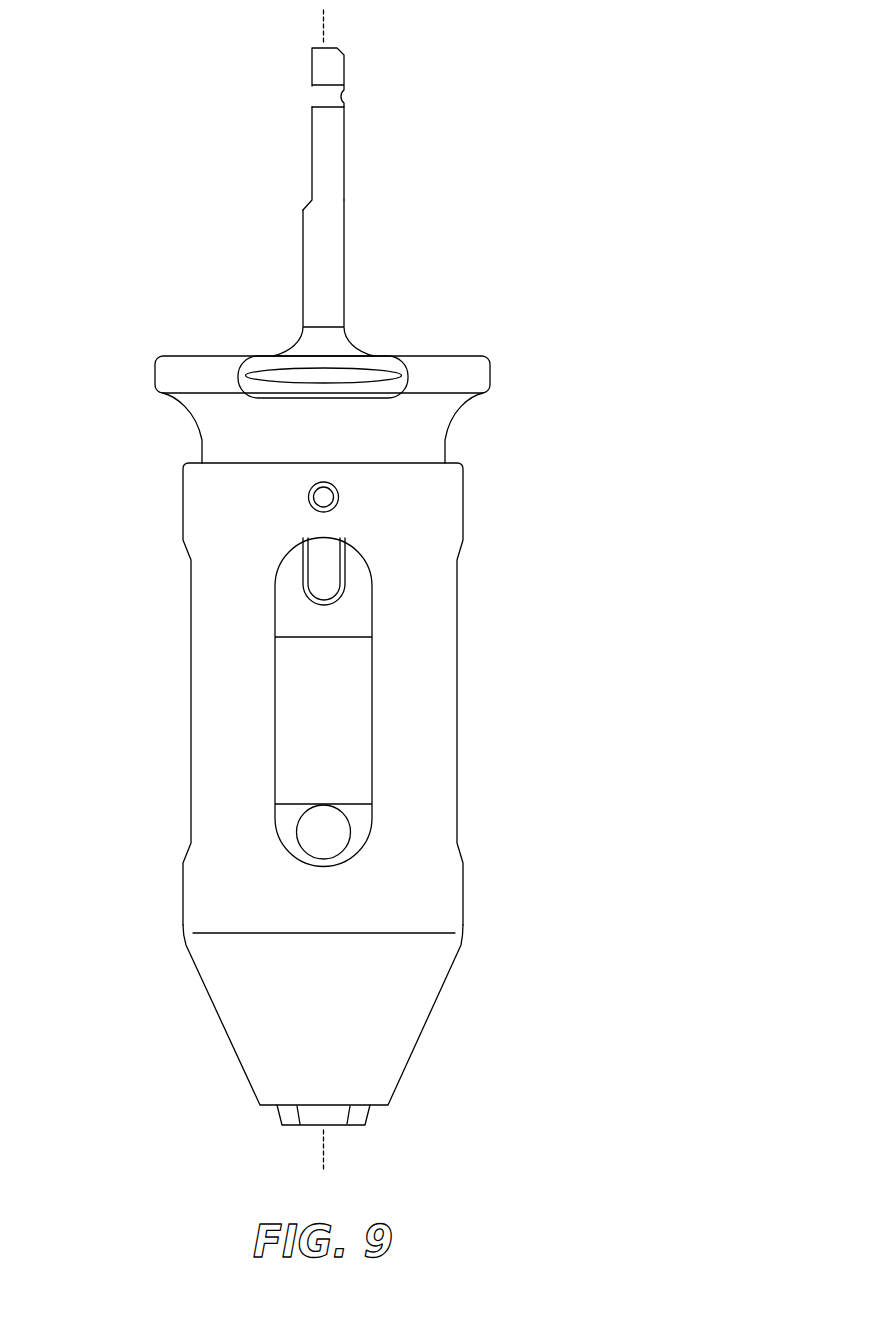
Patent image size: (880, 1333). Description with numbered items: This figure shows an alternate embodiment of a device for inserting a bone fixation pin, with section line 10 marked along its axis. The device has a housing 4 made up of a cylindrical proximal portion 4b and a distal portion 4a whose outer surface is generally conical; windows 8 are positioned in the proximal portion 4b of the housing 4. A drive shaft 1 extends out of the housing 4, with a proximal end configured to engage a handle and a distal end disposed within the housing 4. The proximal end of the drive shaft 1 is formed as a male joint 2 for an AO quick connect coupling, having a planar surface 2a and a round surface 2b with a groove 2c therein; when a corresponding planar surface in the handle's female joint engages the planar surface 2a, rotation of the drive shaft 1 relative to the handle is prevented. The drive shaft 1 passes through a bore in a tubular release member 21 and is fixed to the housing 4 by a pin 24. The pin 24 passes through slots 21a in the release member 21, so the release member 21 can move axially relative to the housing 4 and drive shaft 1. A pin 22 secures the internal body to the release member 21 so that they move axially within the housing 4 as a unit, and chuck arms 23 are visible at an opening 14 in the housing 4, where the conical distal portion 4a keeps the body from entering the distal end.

The drive shaft 1 is at (344, 264).
The male joint 2 is at (303, 125).
The planar surface 2a is at (312, 137).
The round surface 2b is at (344, 124).
The groove 2c is at (345, 96).
The housing 4 is at (248, 784).
The distal portion 4a is at (193, 975).
The proximal portion 4b is at (191, 727).
The windows 8 is at (358, 697).
The section line 10 is at (318, 15).
The opening 14 is at (373, 1108).
The tubular release member 21 is at (462, 404).
The slots 21a is at (332, 570).
The pin 22 is at (348, 830).
The chuck arms 23 is at (280, 1110).
The pin 24 is at (338, 500).